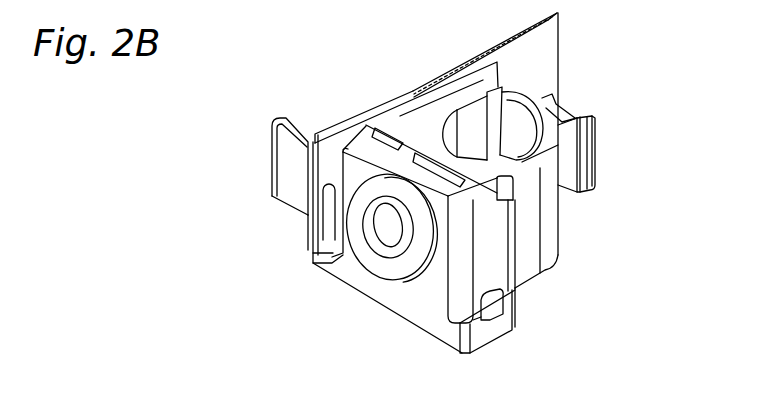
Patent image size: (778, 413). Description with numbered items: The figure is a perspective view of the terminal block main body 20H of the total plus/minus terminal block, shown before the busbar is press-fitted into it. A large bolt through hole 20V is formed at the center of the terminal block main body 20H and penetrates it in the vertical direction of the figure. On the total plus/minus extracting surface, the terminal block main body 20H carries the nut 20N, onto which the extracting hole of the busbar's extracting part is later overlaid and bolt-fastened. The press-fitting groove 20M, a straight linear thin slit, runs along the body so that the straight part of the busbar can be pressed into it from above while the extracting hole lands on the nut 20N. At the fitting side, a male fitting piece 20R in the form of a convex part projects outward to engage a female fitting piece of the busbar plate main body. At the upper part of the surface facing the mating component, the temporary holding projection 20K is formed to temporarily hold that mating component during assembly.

The terminal block main body 20H is at (571, 54).
The press-fitting groove 20M is at (368, 129).
The bolt through hole 20V is at (477, 120).
The male fitting piece 20R is at (597, 137).
The temporary holding projection 20K is at (290, 184).
The nut 20N is at (395, 265).